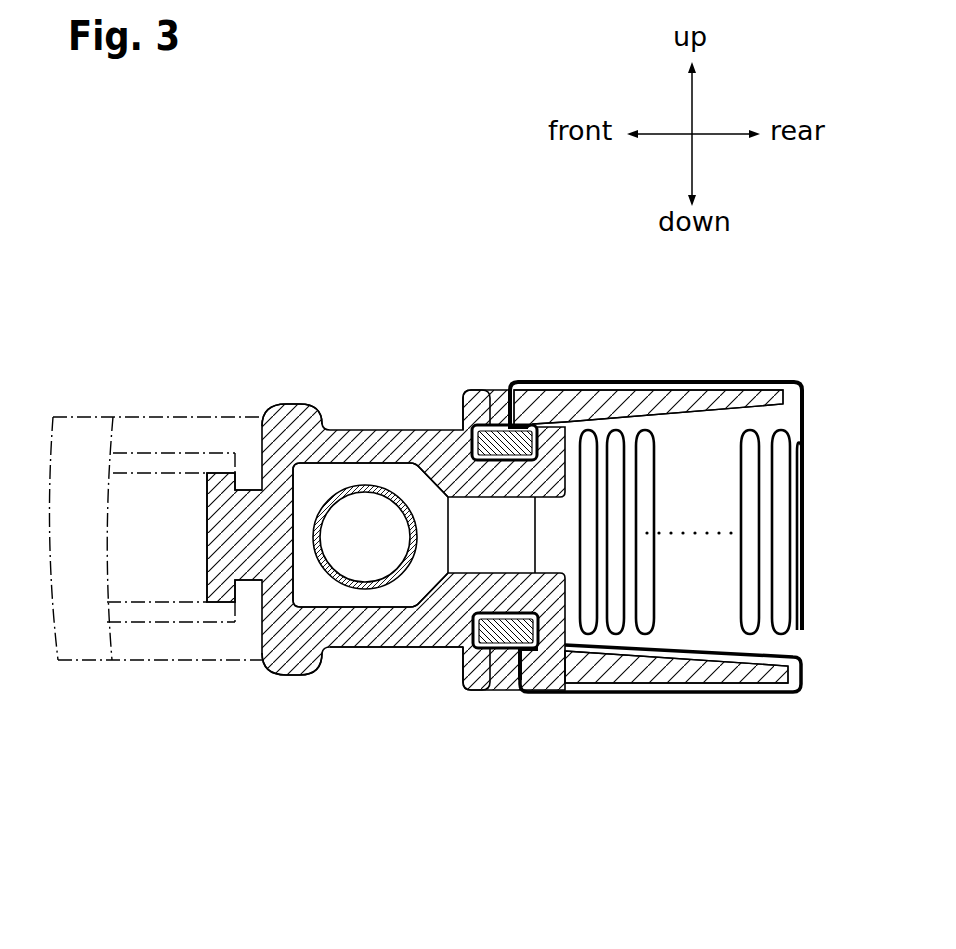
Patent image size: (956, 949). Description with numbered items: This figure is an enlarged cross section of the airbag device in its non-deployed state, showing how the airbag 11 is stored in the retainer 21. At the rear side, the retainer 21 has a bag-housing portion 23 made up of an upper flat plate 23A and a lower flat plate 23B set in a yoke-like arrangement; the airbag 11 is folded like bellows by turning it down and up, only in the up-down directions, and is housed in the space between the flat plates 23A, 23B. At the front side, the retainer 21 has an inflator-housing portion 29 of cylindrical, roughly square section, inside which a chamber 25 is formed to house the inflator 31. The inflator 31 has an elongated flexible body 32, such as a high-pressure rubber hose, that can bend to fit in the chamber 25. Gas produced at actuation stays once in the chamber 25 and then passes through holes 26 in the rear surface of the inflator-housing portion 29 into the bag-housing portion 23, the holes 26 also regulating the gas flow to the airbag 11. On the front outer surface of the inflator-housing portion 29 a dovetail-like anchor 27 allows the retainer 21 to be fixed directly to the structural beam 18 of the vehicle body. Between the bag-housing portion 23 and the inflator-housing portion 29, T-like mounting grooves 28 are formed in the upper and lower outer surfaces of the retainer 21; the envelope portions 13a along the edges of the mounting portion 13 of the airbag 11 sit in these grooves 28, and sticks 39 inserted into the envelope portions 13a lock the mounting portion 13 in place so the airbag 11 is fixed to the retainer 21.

The airbag 11 is at (806, 514).
The mounting portion 13 is at (546, 694).
The envelope portions 13a is at (467, 798).
The structural beam 18 is at (86, 655).
The retainer 21 is at (426, 431).
The bag-housing portion 23 is at (658, 683).
The upper flat plate 23A is at (685, 388).
The lower flat plate 23B is at (708, 690).
The chamber 25 is at (332, 598).
The holes 26 is at (477, 559).
The dovetail-like anchor 27 is at (222, 543).
The mounting grooves 28 is at (541, 697).
The inflator-housing portion 29 is at (422, 633).
The inflator 31 is at (376, 476).
The body 32 is at (377, 593).
The sticks 39 is at (493, 737).